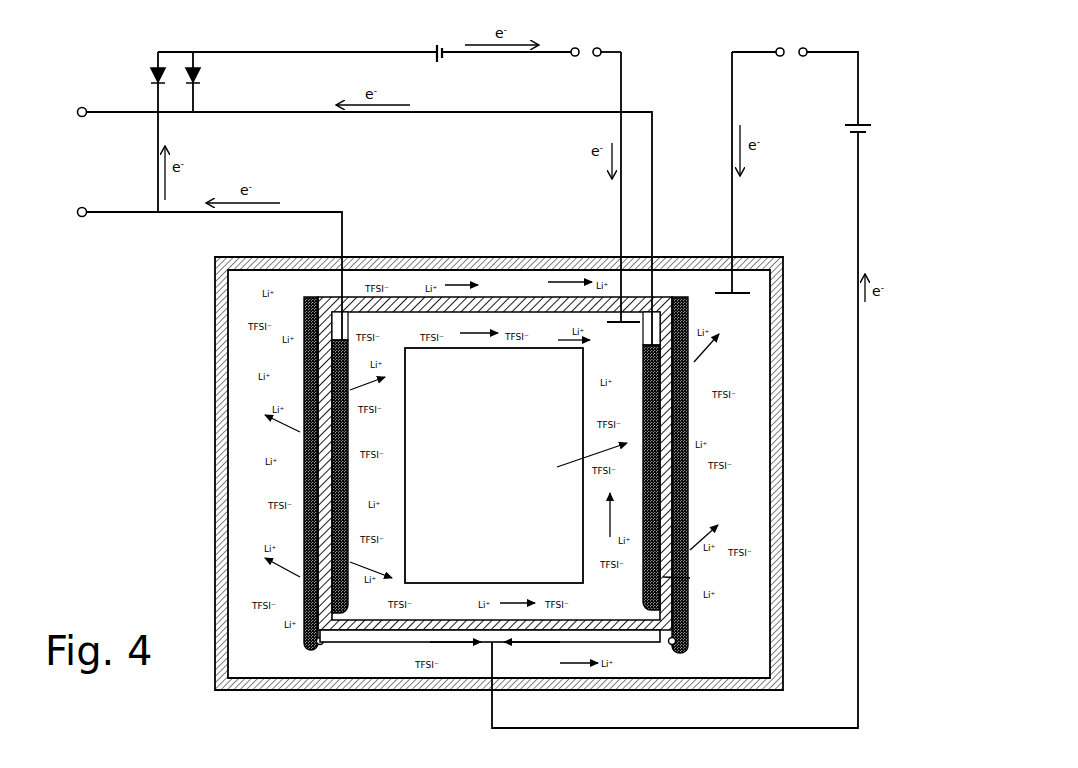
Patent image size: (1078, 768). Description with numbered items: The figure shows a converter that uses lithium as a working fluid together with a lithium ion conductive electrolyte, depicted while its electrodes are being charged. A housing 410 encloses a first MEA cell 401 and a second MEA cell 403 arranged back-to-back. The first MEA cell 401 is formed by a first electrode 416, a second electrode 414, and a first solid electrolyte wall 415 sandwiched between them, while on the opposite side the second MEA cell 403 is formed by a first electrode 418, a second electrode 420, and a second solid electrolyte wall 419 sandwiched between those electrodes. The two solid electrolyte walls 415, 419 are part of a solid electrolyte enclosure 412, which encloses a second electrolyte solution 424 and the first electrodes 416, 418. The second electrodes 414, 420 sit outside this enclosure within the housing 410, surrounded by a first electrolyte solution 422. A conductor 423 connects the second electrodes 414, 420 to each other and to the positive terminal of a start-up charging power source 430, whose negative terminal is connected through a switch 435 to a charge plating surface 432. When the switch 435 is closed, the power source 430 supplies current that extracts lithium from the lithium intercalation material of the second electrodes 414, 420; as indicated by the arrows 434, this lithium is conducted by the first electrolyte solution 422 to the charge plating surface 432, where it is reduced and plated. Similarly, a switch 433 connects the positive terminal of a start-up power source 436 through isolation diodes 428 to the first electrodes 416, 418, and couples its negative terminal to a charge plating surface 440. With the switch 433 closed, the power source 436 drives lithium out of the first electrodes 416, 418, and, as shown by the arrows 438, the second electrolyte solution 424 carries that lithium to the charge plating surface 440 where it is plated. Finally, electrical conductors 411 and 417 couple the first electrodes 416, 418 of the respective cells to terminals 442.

The first MEA cell 401 is at (322, 285).
The second MEA cell 403 is at (684, 444).
The housing 410 is at (215, 318).
The electrical conductor 411 is at (252, 485).
The solid electrolyte enclosure 412 is at (388, 626).
The second electrode 414 is at (305, 651).
The first solid electrolyte wall 415 is at (303, 522).
The first electrode 416 is at (330, 642).
The electrical conductor 417 is at (653, 128).
The first electrode 418 is at (657, 635).
The second solid electrolyte wall 419 is at (690, 578).
The second electrode 420 is at (690, 640).
The first electrolyte solution 422 is at (246, 400).
The conductor 423 is at (448, 638).
The second electrolyte solution 424 is at (380, 490).
The isolation diodes 428 is at (147, 70).
The start-up charging power source 430 is at (848, 132).
The charge plating surface 432 is at (732, 292).
The switch 433 is at (592, 45).
The arrows 434 is at (572, 278).
The switch 435 is at (807, 48).
The start-up power source 436 is at (445, 60).
The arrows 438 is at (380, 390).
The charge plating surface 440 is at (621, 318).
The terminals 442 is at (80, 117).